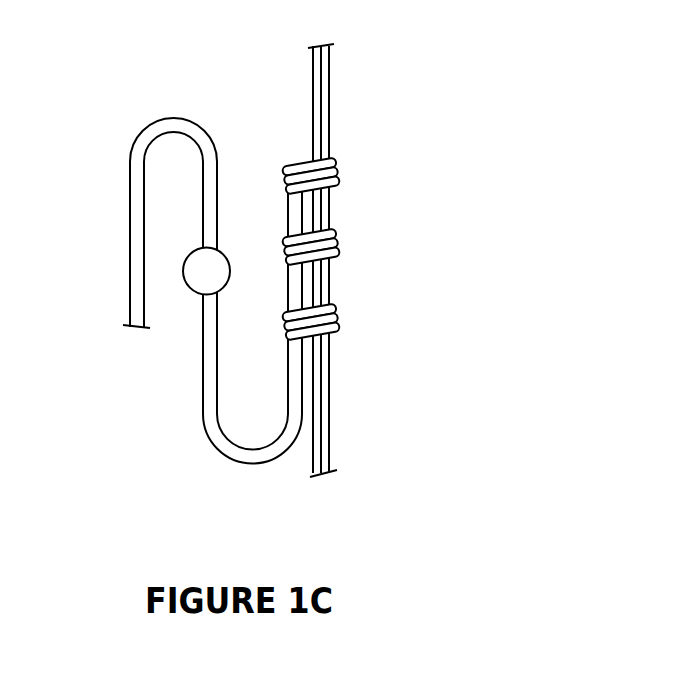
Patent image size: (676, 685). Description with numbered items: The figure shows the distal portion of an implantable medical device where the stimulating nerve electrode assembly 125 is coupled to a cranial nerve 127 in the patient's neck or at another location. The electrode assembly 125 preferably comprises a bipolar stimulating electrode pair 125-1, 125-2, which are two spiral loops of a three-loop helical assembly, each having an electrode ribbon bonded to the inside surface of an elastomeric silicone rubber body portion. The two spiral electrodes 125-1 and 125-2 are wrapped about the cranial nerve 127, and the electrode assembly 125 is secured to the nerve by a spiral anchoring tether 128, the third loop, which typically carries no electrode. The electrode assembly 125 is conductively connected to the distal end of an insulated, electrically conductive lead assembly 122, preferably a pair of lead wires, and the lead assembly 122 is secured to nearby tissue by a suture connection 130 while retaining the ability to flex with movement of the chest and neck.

The lead assembly 122 is at (202, 410).
The stimulating nerve electrode assembly 125 is at (380, 112).
The spiral electrode 125-1 is at (338, 183).
The spiral electrode 125-2 is at (338, 248).
The cranial nerve 127 is at (313, 80).
The spiral anchoring tether 128 is at (338, 327).
The suture connection 130 is at (192, 263).